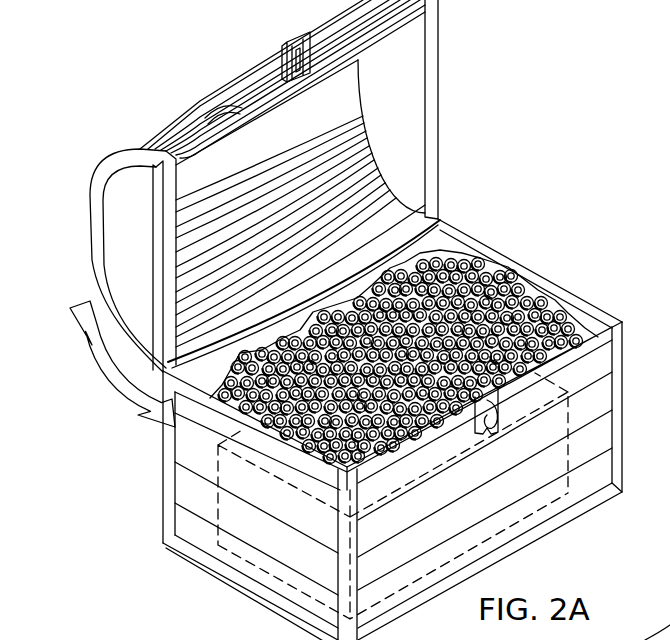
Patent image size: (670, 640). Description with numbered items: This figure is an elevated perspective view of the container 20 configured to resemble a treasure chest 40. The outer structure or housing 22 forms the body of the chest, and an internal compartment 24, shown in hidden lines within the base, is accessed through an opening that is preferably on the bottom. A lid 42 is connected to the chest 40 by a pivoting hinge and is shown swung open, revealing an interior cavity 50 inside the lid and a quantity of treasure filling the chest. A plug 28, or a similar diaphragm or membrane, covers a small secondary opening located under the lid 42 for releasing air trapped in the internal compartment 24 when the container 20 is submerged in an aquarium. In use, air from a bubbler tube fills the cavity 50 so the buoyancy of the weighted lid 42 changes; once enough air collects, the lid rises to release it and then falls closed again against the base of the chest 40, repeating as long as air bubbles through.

The container 20 is at (105, 441).
The outer structure or housing 22 is at (580, 512).
The internal compartment 24 is at (293, 538).
The plug 28 is at (392, 338).
The treasure chest 40 is at (117, 486).
The lid 42 is at (108, 160).
The interior cavity 50 is at (272, 218).